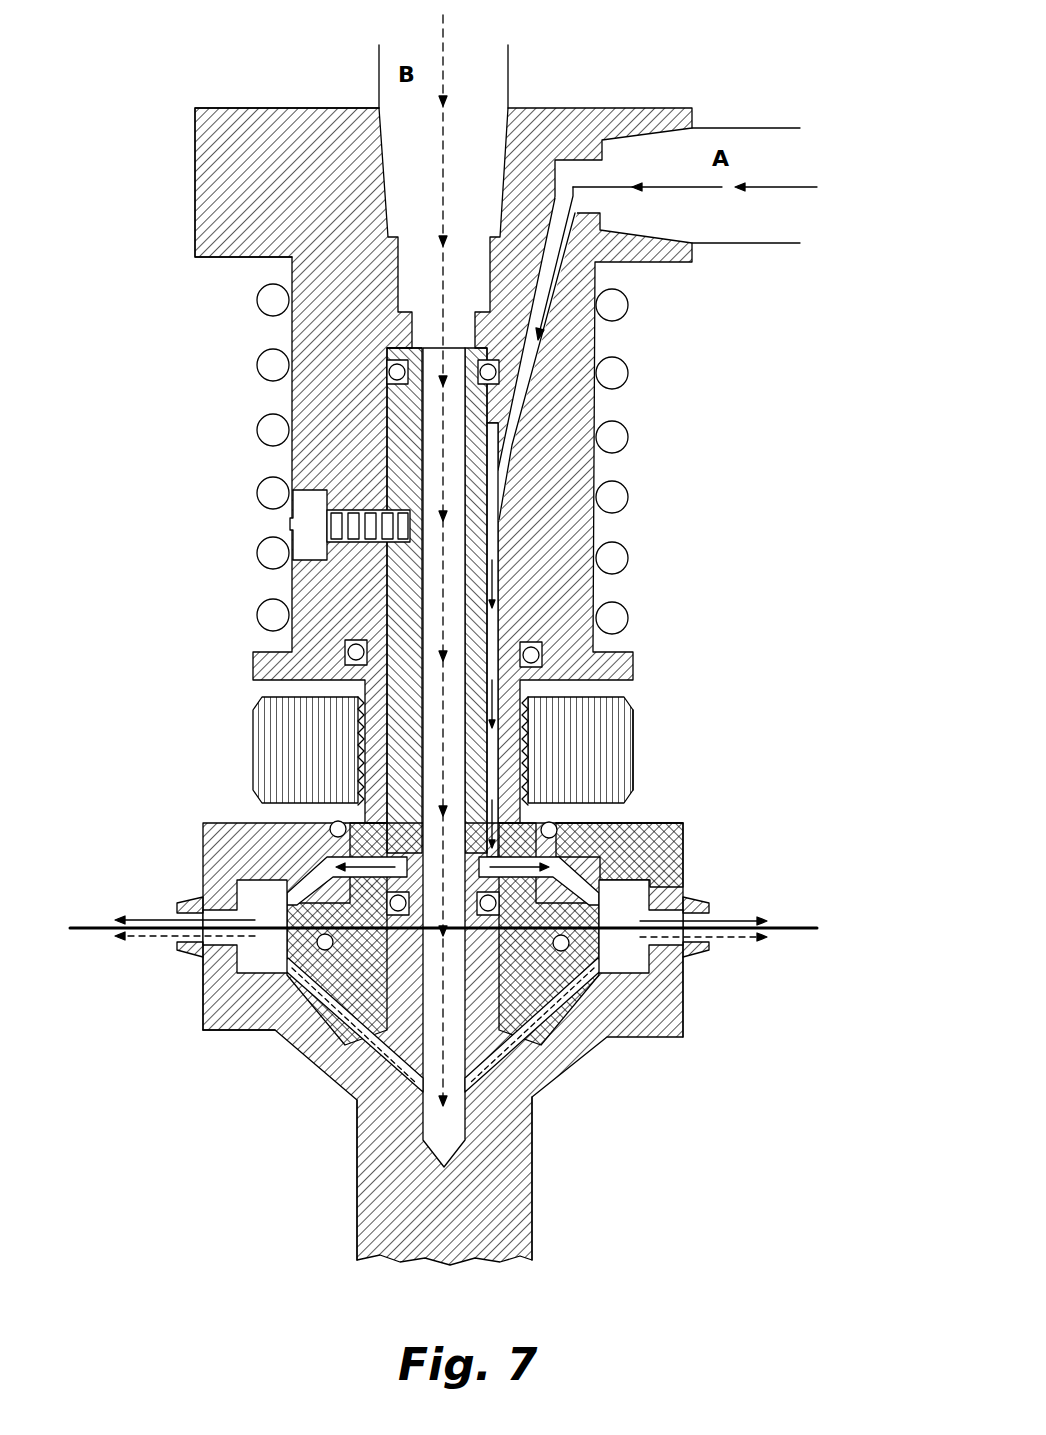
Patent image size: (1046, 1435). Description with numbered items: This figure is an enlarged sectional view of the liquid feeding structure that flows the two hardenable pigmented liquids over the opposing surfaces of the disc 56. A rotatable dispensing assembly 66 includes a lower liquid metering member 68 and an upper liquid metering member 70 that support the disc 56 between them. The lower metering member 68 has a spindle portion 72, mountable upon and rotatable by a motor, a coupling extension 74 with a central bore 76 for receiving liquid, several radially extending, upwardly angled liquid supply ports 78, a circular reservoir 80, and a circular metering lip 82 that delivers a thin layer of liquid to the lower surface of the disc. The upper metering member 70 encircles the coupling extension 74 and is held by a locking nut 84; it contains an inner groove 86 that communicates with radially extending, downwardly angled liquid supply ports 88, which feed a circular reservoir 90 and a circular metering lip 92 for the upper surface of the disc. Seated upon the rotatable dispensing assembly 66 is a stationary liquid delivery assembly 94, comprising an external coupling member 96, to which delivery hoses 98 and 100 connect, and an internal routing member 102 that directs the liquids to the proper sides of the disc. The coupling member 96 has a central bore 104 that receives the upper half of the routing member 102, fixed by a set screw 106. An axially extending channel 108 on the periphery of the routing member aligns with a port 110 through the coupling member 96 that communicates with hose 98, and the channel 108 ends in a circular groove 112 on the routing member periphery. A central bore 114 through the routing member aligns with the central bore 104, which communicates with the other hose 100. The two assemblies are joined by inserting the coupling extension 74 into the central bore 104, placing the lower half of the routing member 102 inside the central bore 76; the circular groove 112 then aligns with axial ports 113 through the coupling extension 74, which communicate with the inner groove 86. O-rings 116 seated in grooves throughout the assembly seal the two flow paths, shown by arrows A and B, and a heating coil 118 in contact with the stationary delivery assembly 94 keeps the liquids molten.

The disc 56 is at (812, 932).
The rotatable dispensing assembly 66 is at (210, 1135).
The lower liquid metering member 68 is at (195, 1010).
The upper liquid metering member 70 is at (205, 835).
The spindle portion 72 is at (357, 1228).
The coupling extension 74 is at (530, 740).
The central bore 76 is at (352, 722).
The liquid supply ports 78 is at (340, 1070).
The circular reservoir 80 is at (205, 988).
The circular metering lip 82 is at (183, 945).
The locking nut 84 is at (633, 770).
The inner groove 86 is at (595, 826).
The liquid supply ports 88 is at (598, 868).
The circular reservoir 90 is at (225, 873).
The circular metering lip 92 is at (185, 905).
The stationary liquid delivery assembly 94 is at (190, 318).
The external coupling member 96 is at (235, 108).
The delivery hose 98 is at (770, 128).
The delivery hose 100 is at (510, 72).
The internal routing member 102 is at (410, 448).
The central bore 104 is at (395, 282).
The set screw 106 is at (305, 540).
The axially extending channel 108 is at (503, 577).
The port 110 is at (596, 362).
The circular groove 112 is at (530, 1080).
The axial ports 113 is at (300, 830).
The central bore 114 is at (458, 630).
The O-rings 116 is at (500, 360).
The heating coil 118 is at (610, 437).